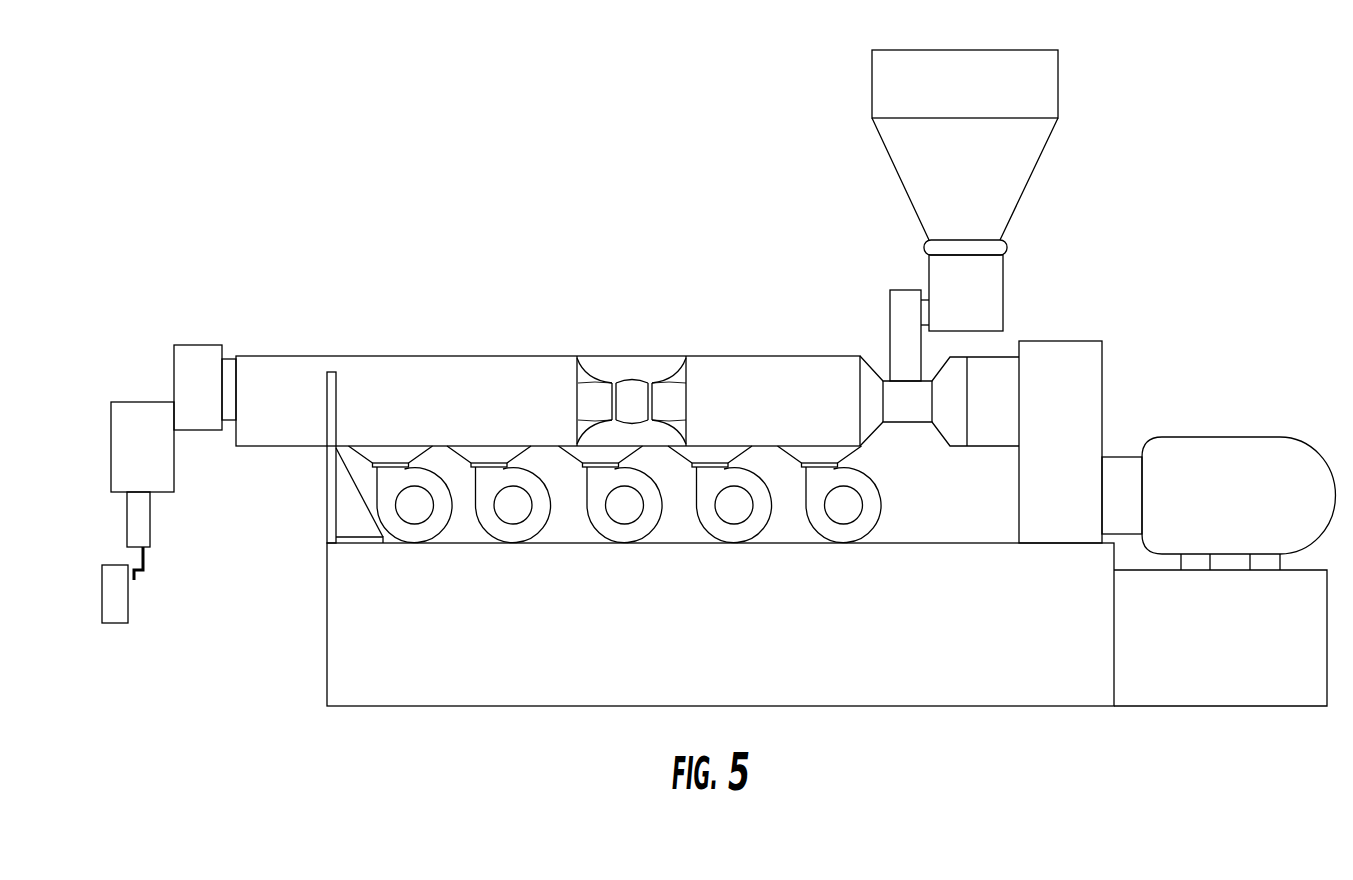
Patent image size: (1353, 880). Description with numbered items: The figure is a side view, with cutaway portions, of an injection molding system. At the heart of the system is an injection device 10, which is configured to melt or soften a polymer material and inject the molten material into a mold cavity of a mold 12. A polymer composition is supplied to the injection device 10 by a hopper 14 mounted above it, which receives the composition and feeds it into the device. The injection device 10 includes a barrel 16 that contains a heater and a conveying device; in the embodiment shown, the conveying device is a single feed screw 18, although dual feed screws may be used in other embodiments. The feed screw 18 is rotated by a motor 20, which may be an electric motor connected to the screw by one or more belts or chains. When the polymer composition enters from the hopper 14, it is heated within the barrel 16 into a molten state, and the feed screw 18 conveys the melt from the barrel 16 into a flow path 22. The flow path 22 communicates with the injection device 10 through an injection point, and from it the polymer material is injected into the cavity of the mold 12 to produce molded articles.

The injection device 10 is at (537, 326).
The mold 12 is at (128, 606).
The hopper 14 is at (1048, 86).
The barrel 16 is at (438, 380).
The feed screw 18 is at (632, 390).
The motor 20 is at (1237, 448).
The flow path 22 is at (150, 528).